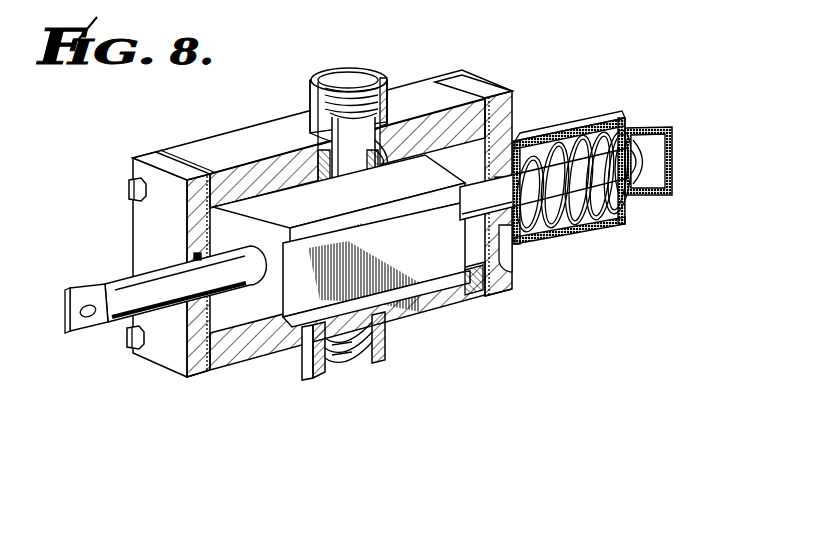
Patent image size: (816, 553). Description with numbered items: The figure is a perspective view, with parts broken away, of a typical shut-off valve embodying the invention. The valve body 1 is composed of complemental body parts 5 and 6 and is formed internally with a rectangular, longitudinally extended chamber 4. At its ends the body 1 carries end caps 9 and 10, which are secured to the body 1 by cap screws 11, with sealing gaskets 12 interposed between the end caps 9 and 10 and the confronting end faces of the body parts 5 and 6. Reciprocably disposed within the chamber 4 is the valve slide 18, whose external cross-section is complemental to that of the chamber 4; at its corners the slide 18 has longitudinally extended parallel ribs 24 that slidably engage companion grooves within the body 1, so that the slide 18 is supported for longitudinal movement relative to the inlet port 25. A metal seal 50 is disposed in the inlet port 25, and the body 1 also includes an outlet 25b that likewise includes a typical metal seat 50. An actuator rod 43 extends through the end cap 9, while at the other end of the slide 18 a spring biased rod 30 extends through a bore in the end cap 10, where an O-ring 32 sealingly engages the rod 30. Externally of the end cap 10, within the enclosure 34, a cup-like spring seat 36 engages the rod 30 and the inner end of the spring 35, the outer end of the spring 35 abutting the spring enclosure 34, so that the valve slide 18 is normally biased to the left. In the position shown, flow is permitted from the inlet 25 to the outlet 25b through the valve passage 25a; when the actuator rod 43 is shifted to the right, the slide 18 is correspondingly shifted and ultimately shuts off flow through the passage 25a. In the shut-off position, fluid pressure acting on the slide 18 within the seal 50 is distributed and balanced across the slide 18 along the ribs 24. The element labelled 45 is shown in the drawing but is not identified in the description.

The body 1 is at (368, 226).
The chamber 4 is at (254, 172).
The body part 5 is at (414, 320).
The body part 6 is at (338, 236).
The end cap 9 is at (197, 364).
The end cap 10 is at (505, 118).
The cap screws 11 is at (128, 187).
The sealing gaskets 12 is at (213, 352).
The valve slide 18 is at (452, 310).
The ribs 24 is at (418, 205).
The inlet port 25 is at (360, 80).
The valve passage 25a is at (335, 184).
The outlet 25b is at (370, 347).
The rod 30 is at (544, 184).
The O-ring 32 is at (505, 279).
The enclosure 34 is at (600, 128).
The spring 35 is at (592, 237).
The spring seat 36 is at (532, 170).
The actuator rod 43 is at (122, 292).
The set screw 45 is at (194, 255).
The metal seal 50 is at (383, 183).